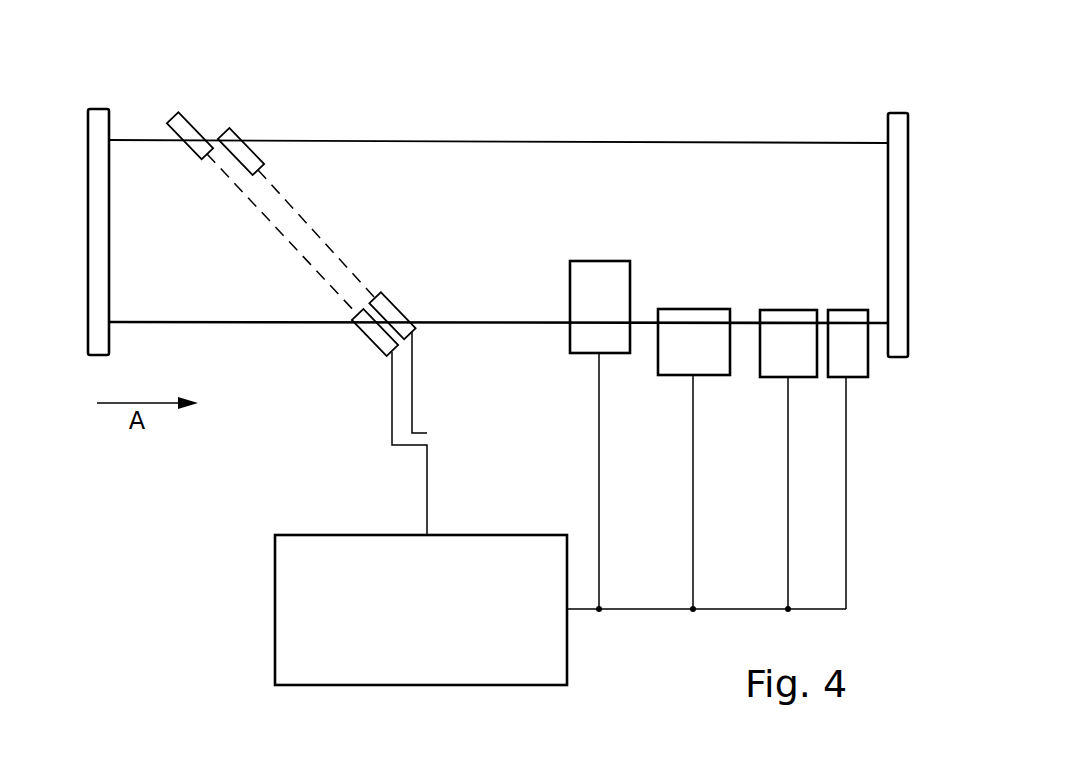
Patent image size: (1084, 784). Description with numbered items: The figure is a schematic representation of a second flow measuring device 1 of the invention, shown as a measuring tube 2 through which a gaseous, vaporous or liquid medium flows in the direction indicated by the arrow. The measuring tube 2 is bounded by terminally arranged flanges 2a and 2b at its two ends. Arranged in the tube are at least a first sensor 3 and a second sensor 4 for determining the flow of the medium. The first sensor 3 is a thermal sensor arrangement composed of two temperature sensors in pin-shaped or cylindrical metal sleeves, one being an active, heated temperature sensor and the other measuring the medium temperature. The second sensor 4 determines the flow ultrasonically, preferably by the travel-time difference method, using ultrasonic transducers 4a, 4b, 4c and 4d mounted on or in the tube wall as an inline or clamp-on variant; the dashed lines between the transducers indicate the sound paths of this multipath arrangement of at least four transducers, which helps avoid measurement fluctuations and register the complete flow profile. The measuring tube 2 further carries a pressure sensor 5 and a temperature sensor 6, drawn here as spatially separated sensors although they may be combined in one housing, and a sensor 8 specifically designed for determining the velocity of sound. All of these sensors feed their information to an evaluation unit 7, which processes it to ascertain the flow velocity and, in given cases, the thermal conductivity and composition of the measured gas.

The flow measuring device 1 is at (707, 100).
The measuring tube 2 is at (853, 175).
The flange 2a is at (898, 120).
The flange 2b is at (102, 120).
The first sensor 3 is at (590, 320).
The second sensor 4 is at (246, 133).
The ultrasonic transducer 4a is at (185, 125).
The ultrasonic transducer 4b is at (370, 343).
The ultrasonic transducer 4c is at (253, 152).
The ultrasonic transducer 4d is at (395, 313).
The pressure sensor 5 is at (838, 359).
The temperature sensor 6 is at (778, 359).
The evaluation unit 7 is at (414, 624).
The sensor for determining the velocity of sound 8 is at (684, 358).